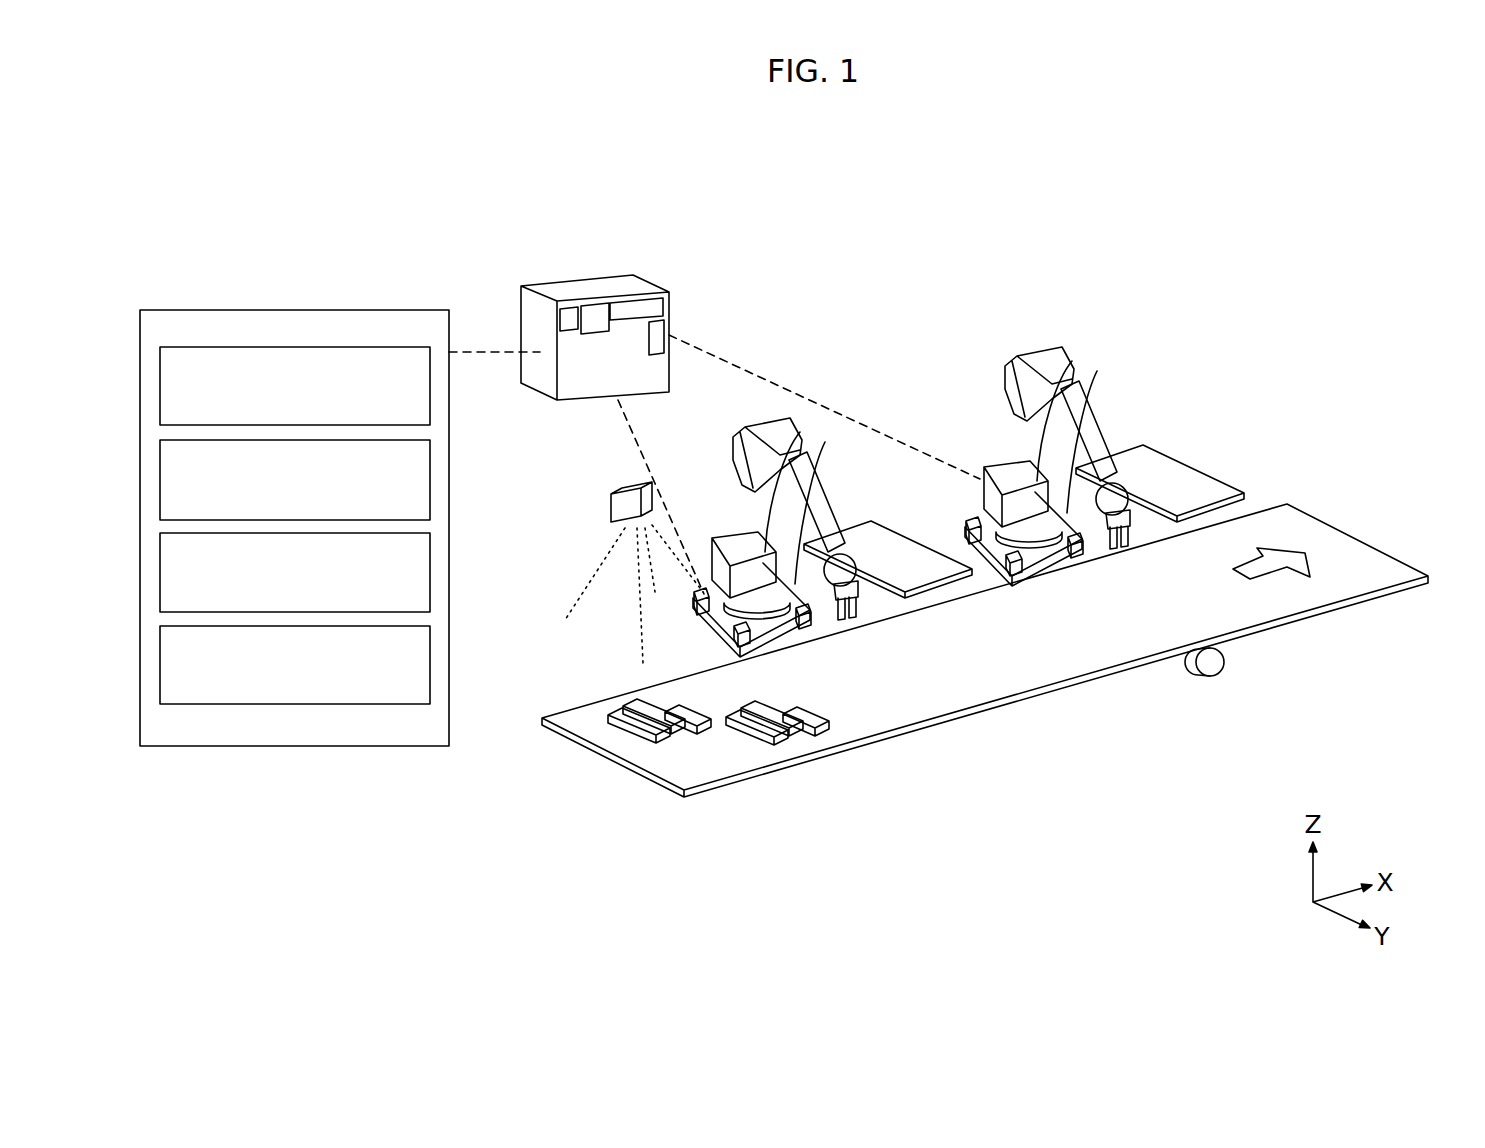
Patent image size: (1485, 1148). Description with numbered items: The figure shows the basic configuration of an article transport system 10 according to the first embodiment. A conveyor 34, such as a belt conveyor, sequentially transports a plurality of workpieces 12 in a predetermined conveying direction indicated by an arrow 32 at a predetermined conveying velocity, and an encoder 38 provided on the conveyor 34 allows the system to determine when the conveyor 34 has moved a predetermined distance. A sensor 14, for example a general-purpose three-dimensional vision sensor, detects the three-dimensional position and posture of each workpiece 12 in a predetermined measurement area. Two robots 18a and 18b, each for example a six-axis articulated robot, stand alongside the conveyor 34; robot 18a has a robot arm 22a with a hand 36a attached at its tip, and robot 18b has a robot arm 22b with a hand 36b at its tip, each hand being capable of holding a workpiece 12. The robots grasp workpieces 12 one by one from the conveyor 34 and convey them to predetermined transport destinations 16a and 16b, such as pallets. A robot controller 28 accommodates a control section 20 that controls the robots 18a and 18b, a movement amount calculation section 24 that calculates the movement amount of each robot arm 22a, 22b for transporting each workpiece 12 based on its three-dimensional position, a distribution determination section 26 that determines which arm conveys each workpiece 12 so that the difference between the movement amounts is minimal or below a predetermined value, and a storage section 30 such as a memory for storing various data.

The article transport system 10 is at (1024, 224).
The workpiece 12 is at (655, 741).
The sensor 14 is at (610, 510).
The transport destination 16a is at (919, 544).
The transport destination 16b is at (1182, 462).
The robot 18a is at (818, 574).
The robot 18b is at (1077, 497).
The control section 20 is at (325, 347).
The robot arm 22a is at (823, 500).
The robot arm 22b is at (1100, 442).
The movement amount calculation section 24 is at (430, 478).
The distribution determination section 26 is at (430, 570).
The robot controller 28 is at (597, 278).
The storage section 30 is at (430, 662).
The arrow 32 is at (1280, 570).
The conveyor 34 is at (1017, 702).
The hand 36a is at (857, 612).
The hand 36b is at (1110, 548).
The encoder 38 is at (1217, 676).